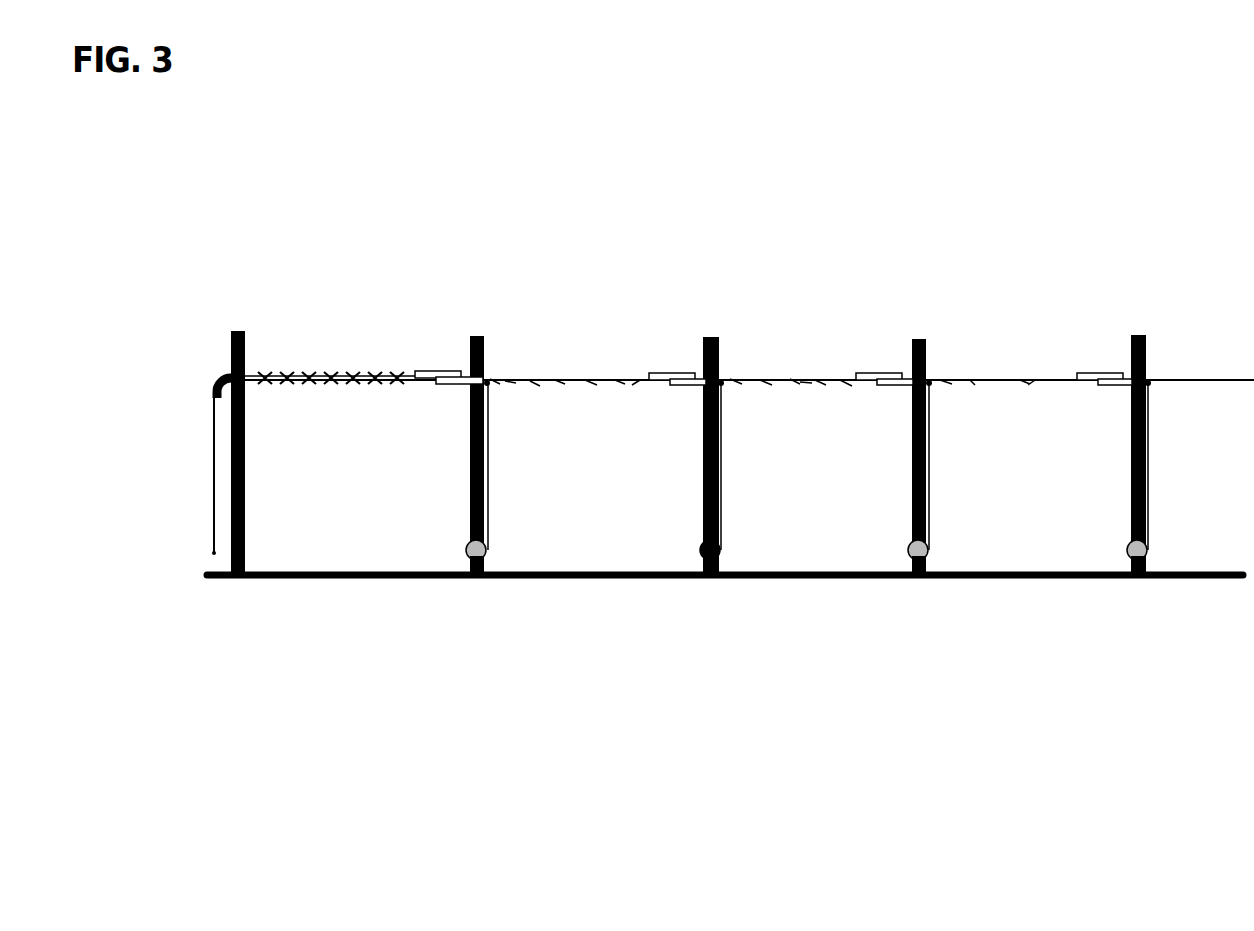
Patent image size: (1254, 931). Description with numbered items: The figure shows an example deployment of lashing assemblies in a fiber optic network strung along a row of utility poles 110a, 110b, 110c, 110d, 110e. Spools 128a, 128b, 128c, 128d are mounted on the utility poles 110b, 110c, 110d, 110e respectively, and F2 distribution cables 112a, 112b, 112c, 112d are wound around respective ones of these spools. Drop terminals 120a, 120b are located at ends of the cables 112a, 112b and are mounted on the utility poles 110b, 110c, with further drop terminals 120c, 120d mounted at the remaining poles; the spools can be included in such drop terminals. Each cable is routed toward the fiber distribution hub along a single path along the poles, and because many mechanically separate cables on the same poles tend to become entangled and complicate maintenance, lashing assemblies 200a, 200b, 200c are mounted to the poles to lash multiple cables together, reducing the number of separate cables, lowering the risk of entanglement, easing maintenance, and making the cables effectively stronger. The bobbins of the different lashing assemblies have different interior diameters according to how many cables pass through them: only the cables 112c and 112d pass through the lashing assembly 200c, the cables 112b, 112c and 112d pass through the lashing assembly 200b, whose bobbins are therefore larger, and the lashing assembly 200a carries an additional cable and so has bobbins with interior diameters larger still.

The utility pole 110a is at (243, 487).
The utility pole 110b is at (470, 474).
The utility pole 110c is at (703, 437).
The utility pole 110d is at (912, 432).
The utility pole 110e is at (1131, 466).
The F2 distribution cable 112a is at (490, 455).
The F2 distribution cable 112b is at (723, 455).
The F2 distribution cable 112c is at (930, 447).
The F2 distribution cable 112d is at (1150, 437).
The drop terminal 120a is at (485, 553).
The drop terminal 120b is at (722, 555).
The drop terminal 120c is at (930, 555).
The drop terminal 120d is at (1150, 553).
The spool 128a is at (472, 555).
The spool 128b is at (705, 555).
The spool 128c is at (912, 557).
The spool 128d is at (1130, 555).
The lashing assembly 200a is at (428, 370).
The lashing assembly 200b is at (678, 371).
The lashing assembly 200c is at (887, 371).